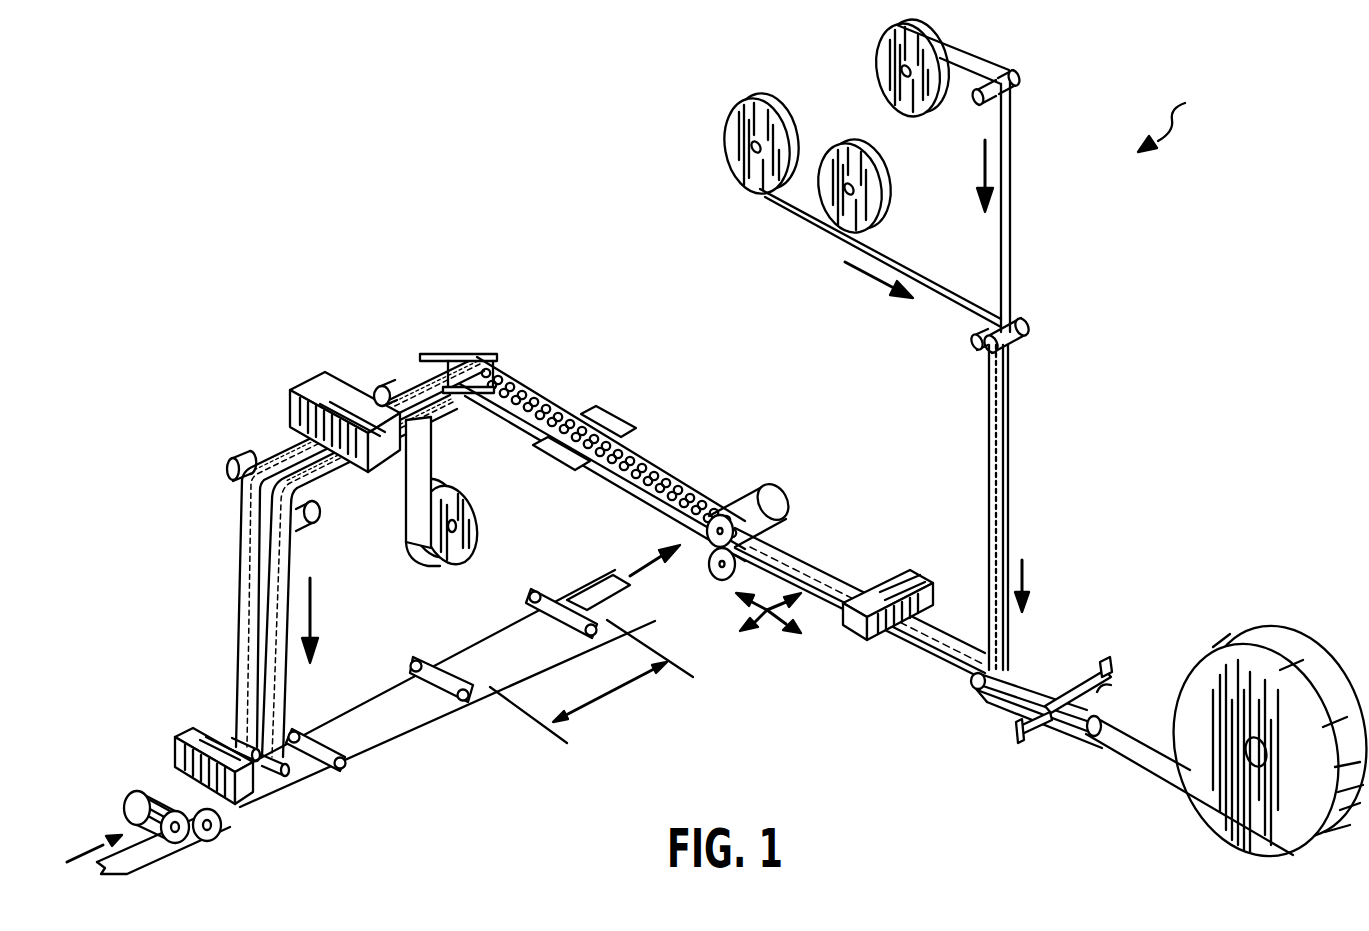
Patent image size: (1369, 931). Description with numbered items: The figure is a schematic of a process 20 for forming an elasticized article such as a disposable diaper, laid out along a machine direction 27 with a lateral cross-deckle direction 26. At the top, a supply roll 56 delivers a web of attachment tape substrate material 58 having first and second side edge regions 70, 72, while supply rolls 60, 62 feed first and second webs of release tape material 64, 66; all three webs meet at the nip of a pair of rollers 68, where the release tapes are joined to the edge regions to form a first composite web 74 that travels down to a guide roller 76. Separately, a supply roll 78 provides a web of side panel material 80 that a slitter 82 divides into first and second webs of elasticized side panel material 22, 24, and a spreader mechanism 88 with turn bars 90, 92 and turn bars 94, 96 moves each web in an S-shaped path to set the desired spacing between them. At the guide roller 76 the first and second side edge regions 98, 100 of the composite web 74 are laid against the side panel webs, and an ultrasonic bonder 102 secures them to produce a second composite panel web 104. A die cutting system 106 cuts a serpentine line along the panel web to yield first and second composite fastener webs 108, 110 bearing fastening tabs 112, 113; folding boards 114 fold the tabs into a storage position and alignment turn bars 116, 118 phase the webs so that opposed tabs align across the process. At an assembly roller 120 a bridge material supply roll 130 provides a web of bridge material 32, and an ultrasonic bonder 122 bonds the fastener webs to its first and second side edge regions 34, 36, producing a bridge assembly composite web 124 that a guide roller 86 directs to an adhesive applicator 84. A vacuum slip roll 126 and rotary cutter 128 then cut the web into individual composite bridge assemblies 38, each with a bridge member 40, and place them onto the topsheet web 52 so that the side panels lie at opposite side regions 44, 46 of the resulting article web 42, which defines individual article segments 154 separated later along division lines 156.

The process 20 is at (1175, 119).
The first web of elasticized side panel material 22 is at (992, 695).
The second web of elasticized side panel material 24 is at (1025, 675).
The cross-deckle direction 26 is at (748, 610).
The machine direction 27 is at (770, 628).
The web of bridge material 32 is at (405, 515).
The first side edge region of the bridge web 34 is at (433, 462).
The second side edge region of the bridge web 36 is at (406, 492).
The composite bridge assembly 38 is at (414, 661).
The bridge member 40 is at (442, 658).
The article web 42 is at (386, 729).
The side region of the article web 44 is at (625, 598).
The laterally opposite side region of the article web 46 is at (592, 585).
The topsheet web 52 is at (160, 860).
The supply roll 56 is at (880, 62).
The web of attachment tape substrate material 58 is at (1012, 118).
The supply roll 60 is at (727, 135).
The supply roll 62 is at (832, 160).
The first web of release tape material 64 is at (795, 216).
The second web of release tape material 66 is at (903, 243).
The pair of rollers 68 is at (1035, 328).
The first side edge region of the substrate web 70 is at (1000, 243).
The second side edge region of the substrate web 72 is at (1012, 290).
The first composite web 74 is at (1010, 550).
The guide roller 76 is at (965, 686).
The supply roll 78 is at (1285, 650).
The web of side panel material 80 is at (1150, 762).
The slitter 82 is at (1105, 722).
The adhesive applicator 84 is at (185, 728).
The guide roller 86 is at (233, 462).
The spreader mechanism 88 is at (1108, 660).
The turn bar 90 is at (1015, 726).
The turn bar 92 is at (1024, 740).
The turn bar 94 is at (1077, 672).
The turn bar 96 is at (1112, 683).
The first side edge region of the composite web 98 is at (988, 445).
The second side edge region of the composite web 100 is at (1010, 438).
The ultrasonic bonder 102 is at (908, 572).
The second composite panel web 104 is at (822, 552).
The die cutting system 106 is at (775, 490).
The first composite fastener web 108 is at (522, 409).
The second composite fastener web 110 is at (508, 375).
The fastening tab 112 is at (536, 446).
The fastening tab 113 is at (540, 400).
The folding boards 114 is at (606, 408).
The alignment turn bar 116 is at (428, 352).
The alignment turn bar 118 is at (457, 355).
The assembly roller 120 is at (380, 390).
The ultrasonic bonder 122 is at (312, 382).
The bridge assembly composite web 124 is at (325, 480).
The vacuum slip roll 126 is at (222, 828).
The rotary cutter 128 is at (135, 790).
The bridge material supply roll 130 is at (480, 528).
The individual article segments 154 is at (591, 681).
The division lines 156 is at (560, 593).